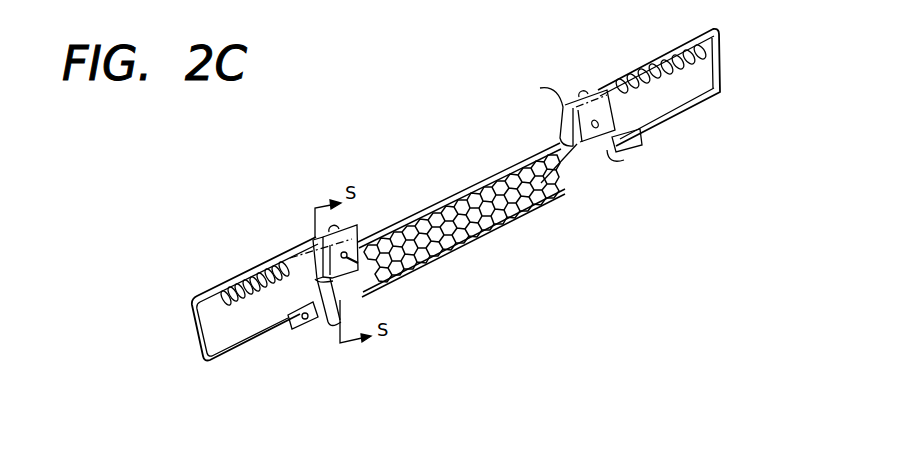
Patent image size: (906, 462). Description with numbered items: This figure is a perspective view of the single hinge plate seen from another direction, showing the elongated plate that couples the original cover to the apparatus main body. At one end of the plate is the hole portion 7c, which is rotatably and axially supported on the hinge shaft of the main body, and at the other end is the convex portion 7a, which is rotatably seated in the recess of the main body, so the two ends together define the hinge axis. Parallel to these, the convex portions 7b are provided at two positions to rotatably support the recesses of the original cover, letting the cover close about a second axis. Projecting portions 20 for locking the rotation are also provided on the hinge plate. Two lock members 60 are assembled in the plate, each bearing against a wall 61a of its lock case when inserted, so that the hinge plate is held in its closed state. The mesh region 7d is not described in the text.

The convex portion 7a is at (618, 86).
The convex portions 7b is at (620, 158).
The hole portion 7c is at (223, 290).
The mesh (honeycomb) portion 7d is at (558, 192).
The projecting portions 20 is at (628, 148).
The lock member 60 is at (541, 89).
The wall 61a is at (358, 263).